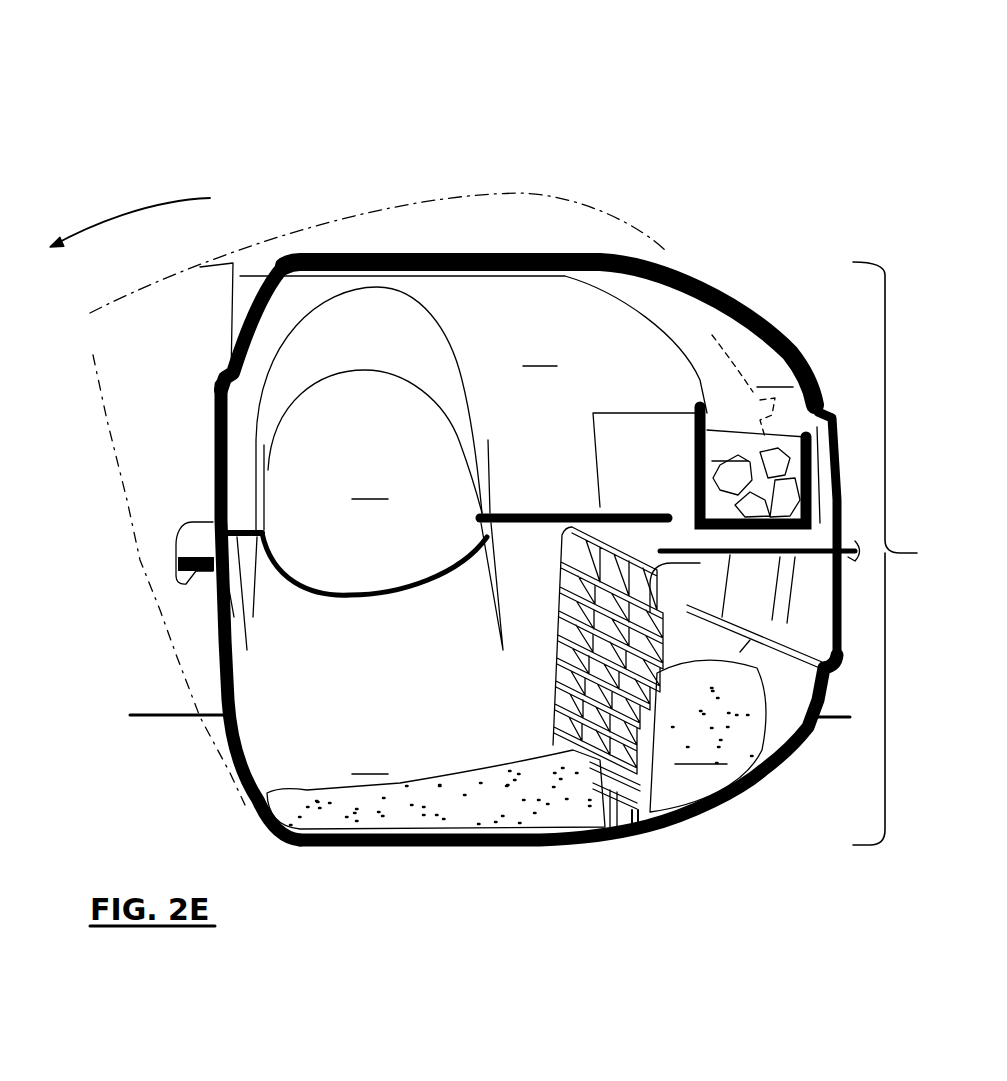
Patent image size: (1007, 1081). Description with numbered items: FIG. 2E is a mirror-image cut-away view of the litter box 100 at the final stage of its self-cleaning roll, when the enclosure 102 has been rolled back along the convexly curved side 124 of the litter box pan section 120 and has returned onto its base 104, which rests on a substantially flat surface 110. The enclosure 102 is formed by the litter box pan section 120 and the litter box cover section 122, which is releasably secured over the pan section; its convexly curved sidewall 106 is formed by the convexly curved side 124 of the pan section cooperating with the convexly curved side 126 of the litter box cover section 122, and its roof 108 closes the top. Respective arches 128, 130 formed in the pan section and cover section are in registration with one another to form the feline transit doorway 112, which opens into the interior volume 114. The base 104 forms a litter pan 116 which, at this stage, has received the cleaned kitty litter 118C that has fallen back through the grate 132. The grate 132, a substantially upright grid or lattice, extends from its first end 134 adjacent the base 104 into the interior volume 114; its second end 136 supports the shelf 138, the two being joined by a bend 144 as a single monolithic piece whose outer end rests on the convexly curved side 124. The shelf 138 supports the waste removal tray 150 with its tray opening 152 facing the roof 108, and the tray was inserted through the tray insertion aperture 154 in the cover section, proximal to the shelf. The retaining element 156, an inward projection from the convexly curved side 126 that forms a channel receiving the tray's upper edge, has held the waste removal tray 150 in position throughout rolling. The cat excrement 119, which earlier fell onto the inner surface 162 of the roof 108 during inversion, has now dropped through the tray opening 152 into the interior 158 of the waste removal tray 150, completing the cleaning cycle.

The litter box 100 is at (152, 118).
The enclosure 102 is at (197, 462).
The base 104 is at (433, 846).
The convexly curved sidewall 106 is at (909, 553).
The roof 108 is at (566, 253).
The substantially flat surface 110 is at (153, 733).
The feline transit doorway 112 is at (373, 408).
The interior volume 114 is at (543, 355).
The litter pan 116 is at (436, 789).
The cleaned kitty litter 118C is at (708, 726).
The cat excrement 119 is at (743, 503).
The litter box pan section 120 is at (233, 757).
The litter box cover section 122 is at (258, 280).
The convexly curved side of the litter box pan section 124 is at (732, 797).
The convexly curved side of the litter box cover section 126 is at (777, 347).
The arch of the litter box pan section 128 is at (325, 587).
The arch of the litter box cover section 130 is at (330, 377).
The grate 132 is at (550, 710).
The first end of the grate 134 is at (641, 845).
The second end of the grate 136 is at (545, 540).
The shelf 138 is at (625, 527).
The bend 144 is at (585, 543).
The waste removal tray 150 is at (613, 435).
The tray opening 152 is at (724, 408).
The tray insertion aperture 154 is at (700, 405).
The retaining element 156 is at (800, 427).
The interior of the waste removal tray 158 is at (756, 477).
The inner surface of the roof 162 is at (754, 386).